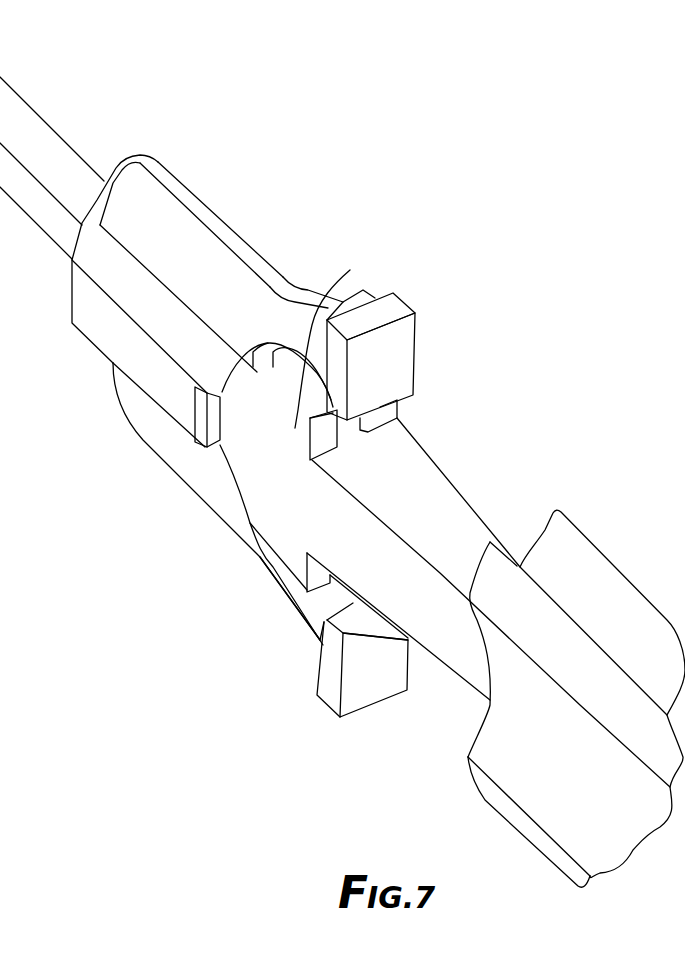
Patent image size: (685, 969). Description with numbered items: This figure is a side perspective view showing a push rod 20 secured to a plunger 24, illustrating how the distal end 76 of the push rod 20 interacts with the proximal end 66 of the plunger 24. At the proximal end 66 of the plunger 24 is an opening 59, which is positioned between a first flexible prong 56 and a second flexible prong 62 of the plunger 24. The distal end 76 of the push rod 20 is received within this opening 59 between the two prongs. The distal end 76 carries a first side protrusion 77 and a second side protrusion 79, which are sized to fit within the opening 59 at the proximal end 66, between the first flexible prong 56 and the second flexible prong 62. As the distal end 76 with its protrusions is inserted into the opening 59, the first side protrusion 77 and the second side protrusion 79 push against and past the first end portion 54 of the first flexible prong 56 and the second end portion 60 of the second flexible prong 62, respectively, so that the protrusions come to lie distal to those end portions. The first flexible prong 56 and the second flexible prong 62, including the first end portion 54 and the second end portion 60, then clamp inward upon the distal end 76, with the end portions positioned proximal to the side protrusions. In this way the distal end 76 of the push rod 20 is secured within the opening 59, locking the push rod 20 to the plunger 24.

The push rod 20 is at (568, 560).
The plunger 24 is at (160, 217).
The first end portion 54 is at (390, 357).
The first flexible prong 56 is at (283, 280).
The opening 59 is at (257, 377).
The second end portion 60 is at (357, 680).
The second flexible prong 62 is at (315, 633).
The proximal end 66 is at (245, 217).
The distal end 76 is at (268, 485).
The first side protrusion 77 is at (350, 270).
The second side protrusion 79 is at (290, 563).